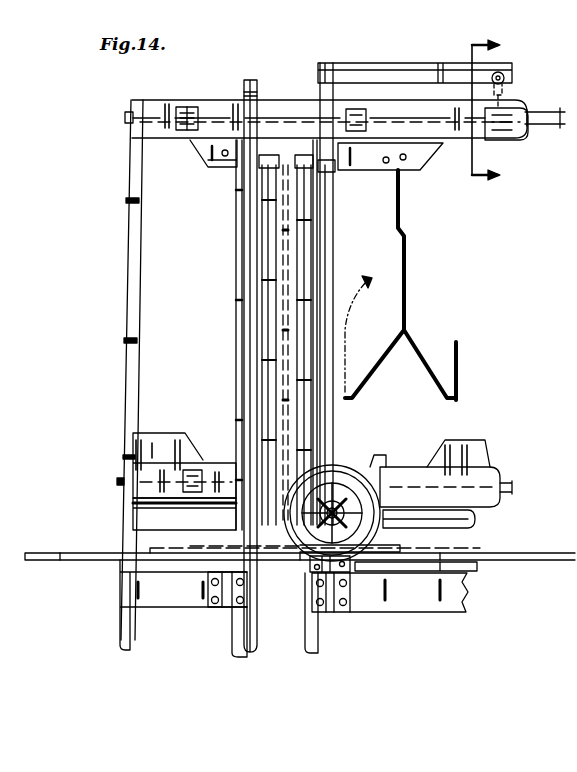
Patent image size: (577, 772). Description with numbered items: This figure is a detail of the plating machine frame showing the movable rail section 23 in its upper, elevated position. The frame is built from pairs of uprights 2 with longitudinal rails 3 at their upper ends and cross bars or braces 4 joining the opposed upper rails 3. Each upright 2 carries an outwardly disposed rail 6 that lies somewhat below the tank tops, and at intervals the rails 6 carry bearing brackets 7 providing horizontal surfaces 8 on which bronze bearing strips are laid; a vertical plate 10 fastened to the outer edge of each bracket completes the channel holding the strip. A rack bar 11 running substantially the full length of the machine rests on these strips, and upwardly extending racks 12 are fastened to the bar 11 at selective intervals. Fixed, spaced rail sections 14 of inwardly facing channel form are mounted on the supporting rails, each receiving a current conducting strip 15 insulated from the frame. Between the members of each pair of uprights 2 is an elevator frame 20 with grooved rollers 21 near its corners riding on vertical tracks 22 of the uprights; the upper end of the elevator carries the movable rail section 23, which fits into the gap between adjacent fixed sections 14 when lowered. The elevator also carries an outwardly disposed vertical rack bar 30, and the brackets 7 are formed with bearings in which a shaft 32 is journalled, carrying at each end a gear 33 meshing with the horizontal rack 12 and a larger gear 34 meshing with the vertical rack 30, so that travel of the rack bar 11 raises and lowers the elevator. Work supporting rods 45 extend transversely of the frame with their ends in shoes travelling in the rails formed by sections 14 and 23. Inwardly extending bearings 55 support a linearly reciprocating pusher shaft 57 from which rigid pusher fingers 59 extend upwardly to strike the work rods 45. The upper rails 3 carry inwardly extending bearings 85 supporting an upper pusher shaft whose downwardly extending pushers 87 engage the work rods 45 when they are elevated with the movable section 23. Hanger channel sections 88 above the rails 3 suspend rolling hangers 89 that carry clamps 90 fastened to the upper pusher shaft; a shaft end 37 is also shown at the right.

The uprights 2 is at (131, 183).
The longitudinal rails 3 is at (170, 104).
The cross bars or braces 4 is at (258, 92).
The outwardly disposed rail 6 is at (138, 593).
The bearing brackets 7 is at (215, 607).
The horizontal surfaces 8 is at (262, 566).
The vertical plate 10 is at (308, 580).
The rack bar 11 is at (48, 553).
The racks 12 is at (150, 553).
The fixed rail sections 14 is at (133, 438).
The current conducting rail or strip 15 is at (498, 112).
The elevator frame 20 is at (245, 163).
The grooved rollers 21 is at (328, 170).
The vertical tracks 22 is at (262, 266).
The movable rail section 23 is at (410, 165).
The vertical rack bar 30 is at (285, 298).
The shaft 32 is at (350, 535).
The gear 33 is at (318, 478).
The larger gear 34 is at (404, 551).
The shaft 37 is at (550, 111).
The work supporting rods 45 is at (408, 185).
The bearings 55 is at (200, 465).
The pusher shaft 57 is at (117, 481).
The pusher fingers 59 is at (384, 458).
The bearings 85 is at (200, 110).
The pushers 87 is at (358, 110).
The hanger channel sections 88 is at (412, 72).
The rolling hangers 89 is at (506, 78).
The clamps 90 is at (520, 140).